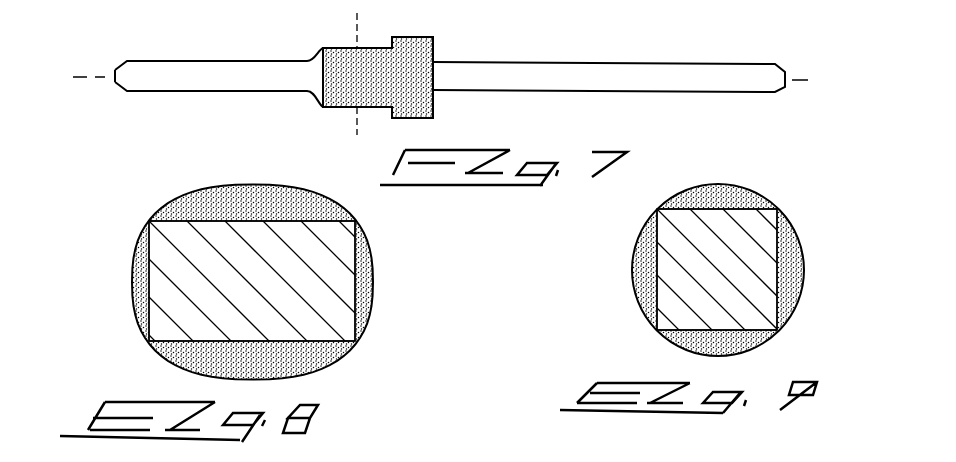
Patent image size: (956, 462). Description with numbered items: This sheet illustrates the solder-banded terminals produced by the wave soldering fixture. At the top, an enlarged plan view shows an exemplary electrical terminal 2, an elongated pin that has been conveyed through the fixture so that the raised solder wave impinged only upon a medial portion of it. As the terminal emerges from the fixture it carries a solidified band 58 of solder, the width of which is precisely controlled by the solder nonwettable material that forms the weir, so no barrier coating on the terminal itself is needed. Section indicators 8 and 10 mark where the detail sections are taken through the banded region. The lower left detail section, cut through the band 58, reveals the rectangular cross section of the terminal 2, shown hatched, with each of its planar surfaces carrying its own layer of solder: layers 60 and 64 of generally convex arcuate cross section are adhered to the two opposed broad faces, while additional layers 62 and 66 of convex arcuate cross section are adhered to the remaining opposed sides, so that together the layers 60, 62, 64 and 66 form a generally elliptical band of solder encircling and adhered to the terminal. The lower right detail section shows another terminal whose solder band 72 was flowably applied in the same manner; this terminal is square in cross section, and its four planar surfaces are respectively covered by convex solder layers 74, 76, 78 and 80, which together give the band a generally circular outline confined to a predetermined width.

In FIG. 7, the electrical terminal 2 is at (603, 70).
In FIG. 8, the electrical terminal 2 is at (337, 245).
In FIG. 7, the solidified band of solder 58 is at (423, 50).
In FIG. 7, the section line 8— 8 is at (320, 135).
In FIG. 7, the section line 10- 10 is at (808, 58).
In FIG. 8, the solder layer 60 is at (248, 195).
In FIG. 8, the solder layer 62 is at (372, 285).
In FIG. 8, the solder layer 64 is at (325, 352).
In FIG. 8, the solder layer 66 is at (132, 278).
In FIG. 9, the solder band 72 is at (763, 237).
In FIG. 9, the convex solder layer 74 is at (737, 187).
In FIG. 9, the convex solder layer 76 is at (790, 278).
In FIG. 9, the convex solder layer 78 is at (757, 337).
In FIG. 9, the convex solder layer 80 is at (642, 247).